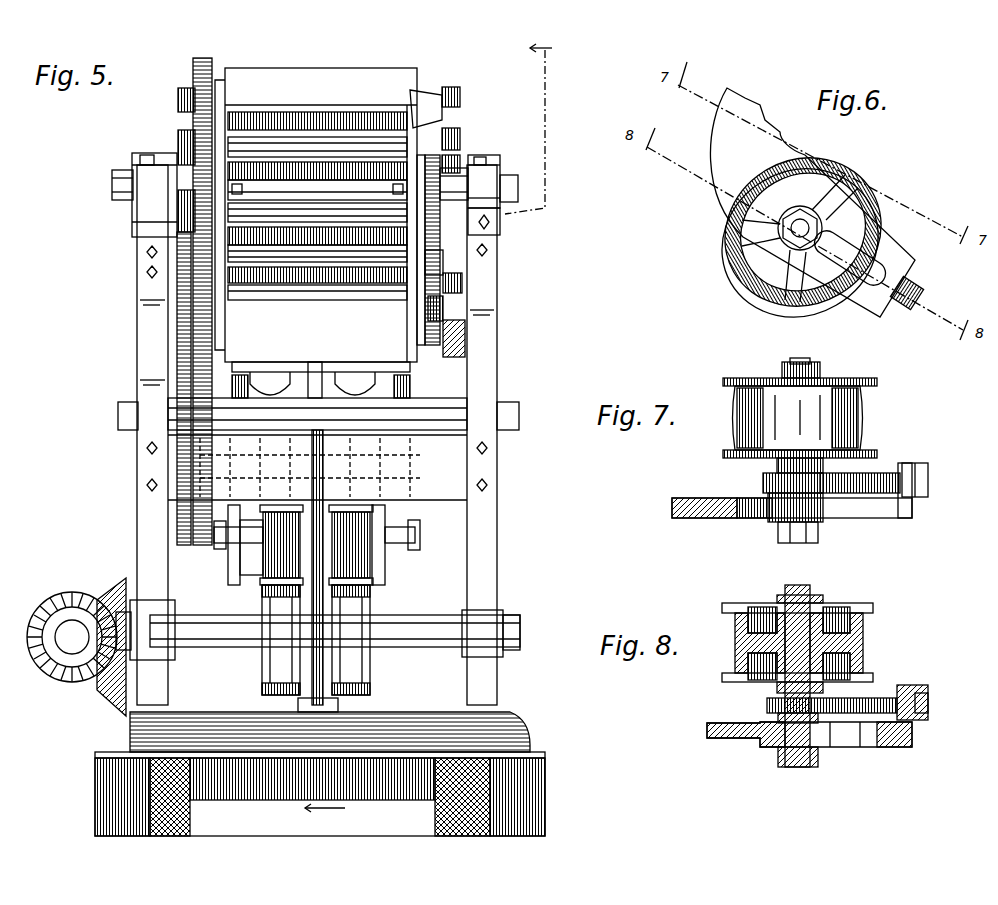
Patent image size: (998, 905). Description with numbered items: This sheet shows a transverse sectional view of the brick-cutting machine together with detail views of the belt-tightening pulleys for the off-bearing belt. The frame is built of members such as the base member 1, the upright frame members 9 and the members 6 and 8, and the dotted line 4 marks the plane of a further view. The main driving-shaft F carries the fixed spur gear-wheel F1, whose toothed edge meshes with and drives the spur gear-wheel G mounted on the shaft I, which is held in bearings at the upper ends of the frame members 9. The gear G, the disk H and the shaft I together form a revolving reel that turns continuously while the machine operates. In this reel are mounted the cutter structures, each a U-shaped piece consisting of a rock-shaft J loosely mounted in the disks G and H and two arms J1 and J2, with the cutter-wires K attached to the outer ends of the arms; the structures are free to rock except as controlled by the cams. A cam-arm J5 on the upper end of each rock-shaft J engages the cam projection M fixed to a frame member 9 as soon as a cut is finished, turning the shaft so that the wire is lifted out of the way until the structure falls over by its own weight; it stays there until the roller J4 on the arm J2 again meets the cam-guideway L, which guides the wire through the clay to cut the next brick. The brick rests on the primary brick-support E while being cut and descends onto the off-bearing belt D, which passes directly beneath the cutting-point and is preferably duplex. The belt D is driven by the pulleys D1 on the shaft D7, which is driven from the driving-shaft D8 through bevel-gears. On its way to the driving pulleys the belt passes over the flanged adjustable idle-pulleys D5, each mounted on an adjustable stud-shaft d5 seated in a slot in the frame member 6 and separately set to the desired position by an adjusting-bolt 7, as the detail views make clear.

In FIG. 5, the spur gear-wheel G is at (212, 70).
In FIG. 5, the cutter-wires K is at (322, 68).
In FIG. 5, the arm J1 is at (228, 94).
In FIG. 5, the arm J2 is at (405, 92).
In FIG. 5, the roller J4 is at (460, 95).
In FIG. 5, the disk H is at (442, 118).
In FIG. 5, the rock-shaft J is at (178, 98).
In FIG. 5, the cam-arm J5 is at (177, 150).
In FIG. 5, the cam projection M is at (133, 222).
In FIG. 5, the shaft I is at (468, 213).
In FIG. 5, the frame member 9 is at (140, 297).
In FIG. 5, the cam-guideway L is at (462, 302).
In FIG. 5, the spur gear-wheel F1 is at (190, 357).
In FIG. 5, the off-bearing belt D is at (280, 385).
In FIG. 5, the primary brick-support E is at (313, 375).
In FIG. 5, the main driving-shaft F is at (433, 427).
In FIG. 5, the frame member 8 is at (477, 467).
In FIG. 5, the adjusting-bolt 7 is at (250, 535).
In FIG. 6, the adjusting-bolt 7 is at (910, 303).
In FIG. 7, the adjusting-bolt 7 is at (883, 477).
In FIG. 8, the adjusting-bolt 7 is at (877, 698).
In FIG. 5, the frame member 6 is at (228, 572).
In FIG. 6, the frame member 6 is at (722, 137).
In FIG. 7, the frame member 6 is at (702, 498).
In FIG. 8, the frame member 6 is at (852, 742).
In FIG. 5, the adjustable idle-pulley D5 is at (316, 545).
In FIG. 6, the adjustable idle-pulley D5 is at (738, 262).
In FIG. 7, the adjustable idle-pulley D5 is at (862, 414).
In FIG. 8, the adjustable idle-pulley D5 is at (865, 638).
In FIG. 5, the adjustable stud-shaft d5 is at (413, 542).
In FIG. 6, the adjustable stud-shaft d5 is at (787, 210).
In FIG. 7, the adjustable stud-shaft d5 is at (805, 360).
In FIG. 8, the adjustable stud-shaft d5 is at (792, 767).
In FIG. 5, the driving-shaft D8 is at (50, 623).
In FIG. 5, the driving pulley D1 is at (265, 675).
In FIG. 5, the shaft D7 is at (443, 640).
In FIG. 5, the frame member 1 is at (538, 760).
In FIG. 5, the section line 4 is at (428, 429).